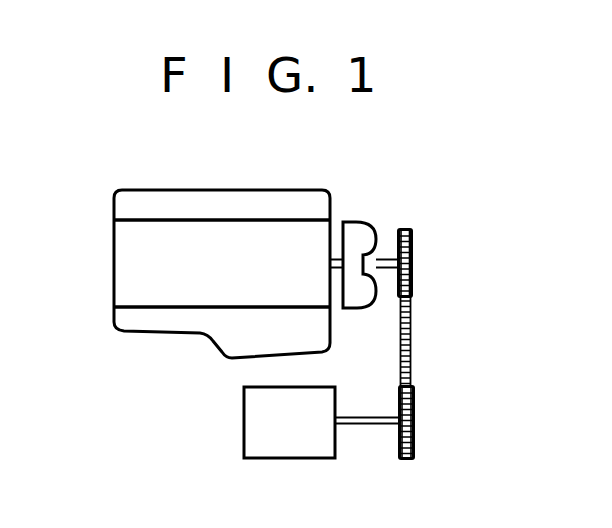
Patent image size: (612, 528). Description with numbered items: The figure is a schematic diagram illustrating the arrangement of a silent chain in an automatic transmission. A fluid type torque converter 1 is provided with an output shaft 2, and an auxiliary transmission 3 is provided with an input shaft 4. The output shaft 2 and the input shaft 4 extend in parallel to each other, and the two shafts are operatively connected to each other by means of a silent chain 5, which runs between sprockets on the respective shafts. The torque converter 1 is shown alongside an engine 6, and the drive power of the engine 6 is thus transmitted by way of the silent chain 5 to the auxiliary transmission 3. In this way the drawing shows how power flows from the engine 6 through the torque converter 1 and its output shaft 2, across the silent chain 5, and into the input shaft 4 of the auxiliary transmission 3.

The fluid type torque converter 1 is at (356, 230).
The output shaft 2 is at (386, 258).
The auxiliary transmission 3 is at (244, 419).
The input shaft 4 is at (365, 416).
The silent chain 5 is at (414, 340).
The engine 6 is at (237, 200).